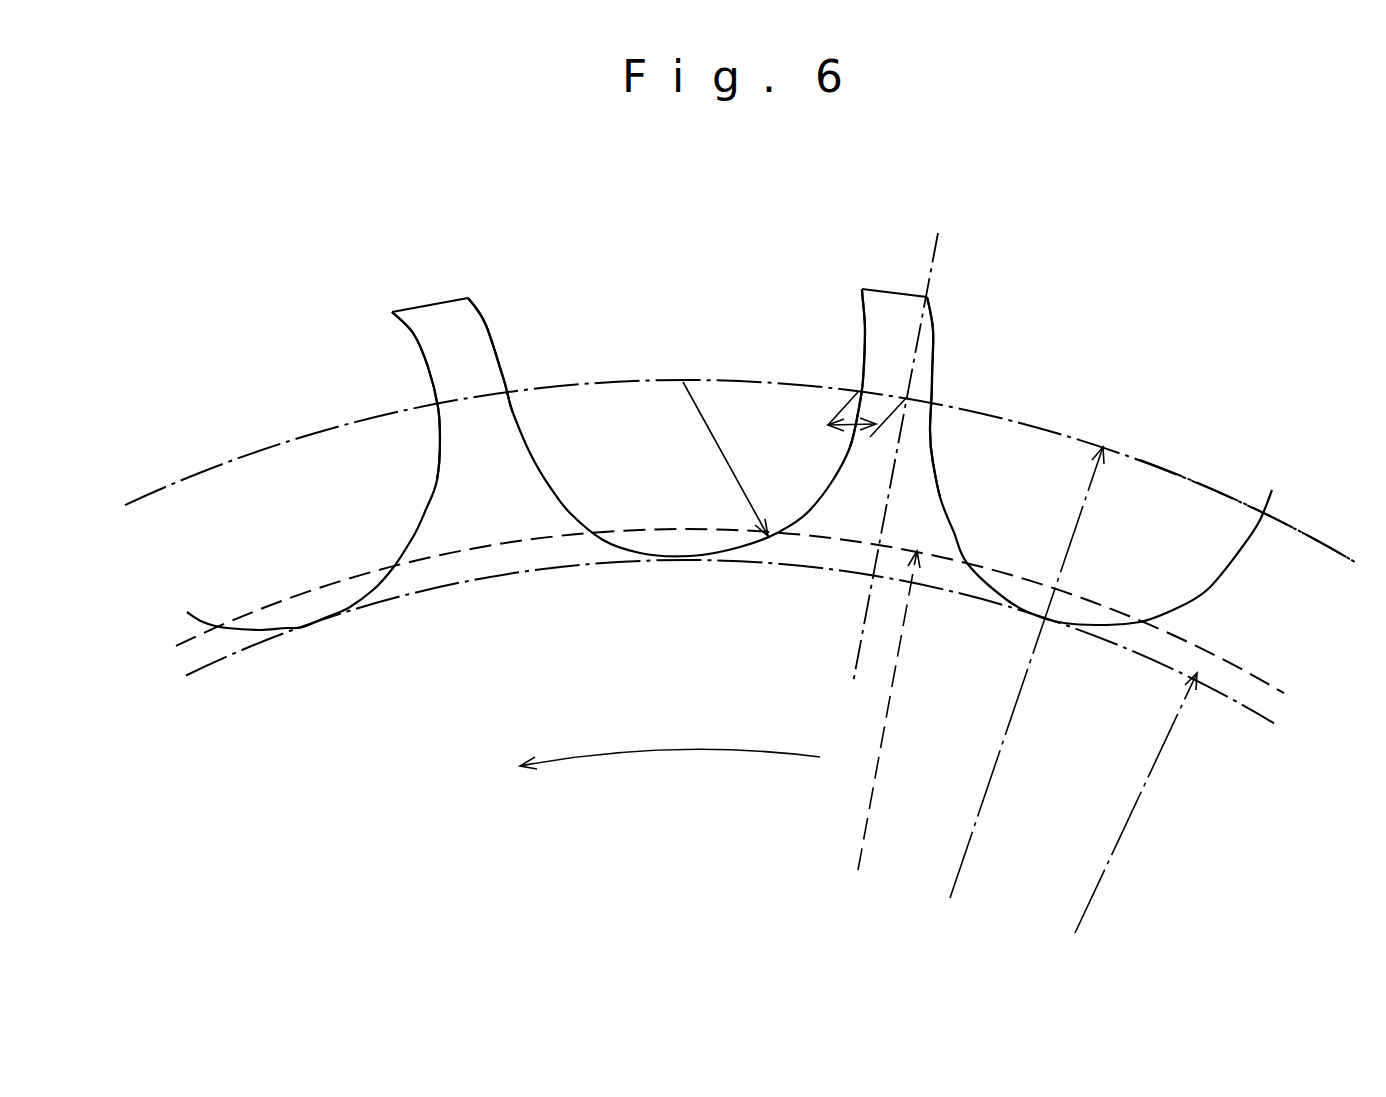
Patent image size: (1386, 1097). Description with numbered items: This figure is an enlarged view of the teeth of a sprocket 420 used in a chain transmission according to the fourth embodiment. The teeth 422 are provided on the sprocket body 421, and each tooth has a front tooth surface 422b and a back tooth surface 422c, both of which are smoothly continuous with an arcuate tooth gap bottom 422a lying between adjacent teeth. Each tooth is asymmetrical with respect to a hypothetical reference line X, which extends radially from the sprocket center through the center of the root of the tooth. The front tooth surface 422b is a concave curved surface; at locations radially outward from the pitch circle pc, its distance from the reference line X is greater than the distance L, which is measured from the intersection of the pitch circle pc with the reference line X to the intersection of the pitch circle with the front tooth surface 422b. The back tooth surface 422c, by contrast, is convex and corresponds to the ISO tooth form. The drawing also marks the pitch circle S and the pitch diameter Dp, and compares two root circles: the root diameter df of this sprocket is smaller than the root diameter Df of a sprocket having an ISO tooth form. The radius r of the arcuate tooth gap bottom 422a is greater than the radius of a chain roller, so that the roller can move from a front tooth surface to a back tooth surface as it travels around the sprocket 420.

The sprocket 420 is at (1137, 272).
The sprocket body 421 is at (446, 771).
The teeth 422 is at (430, 304).
The arcuate tooth gap bottom 422a is at (298, 629).
The front tooth surface 422b is at (413, 337).
The back tooth surface 422c is at (483, 320).
The pitch circle S is at (613, 417).
The pitch circle pc is at (1178, 470).
The hypothetical reference line X is at (901, 442).
The radius of the arcuate tooth gap bottom r is at (723, 457).
The distance L is at (846, 430).
The root diameter of a sprocket having an ISO tooth form Df is at (730, 722).
The pitch circle diameter Dp is at (1023, 693).
The root diameter df is at (730, 768).